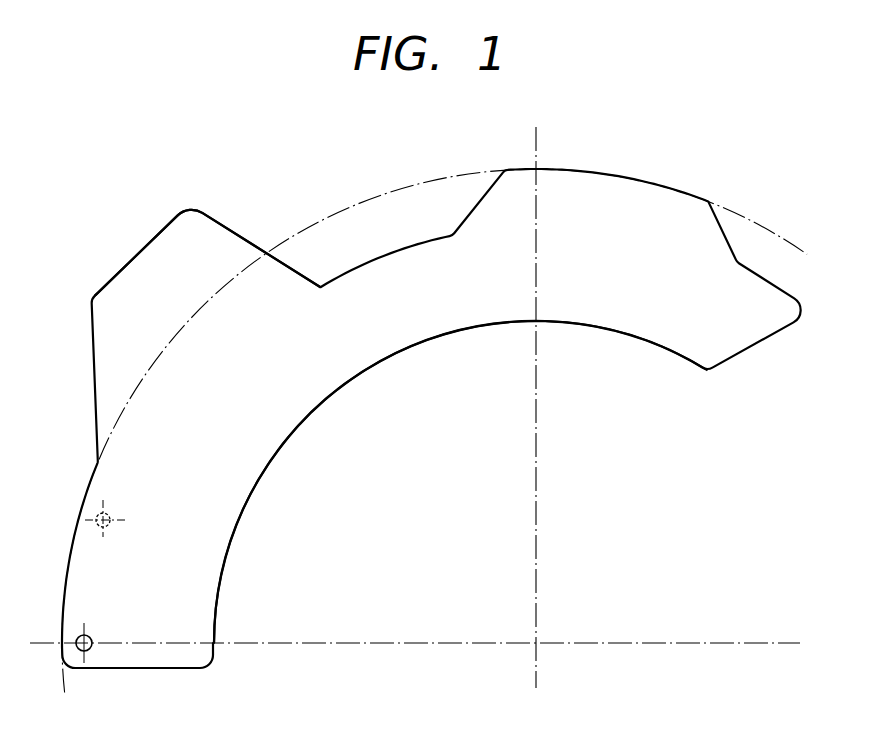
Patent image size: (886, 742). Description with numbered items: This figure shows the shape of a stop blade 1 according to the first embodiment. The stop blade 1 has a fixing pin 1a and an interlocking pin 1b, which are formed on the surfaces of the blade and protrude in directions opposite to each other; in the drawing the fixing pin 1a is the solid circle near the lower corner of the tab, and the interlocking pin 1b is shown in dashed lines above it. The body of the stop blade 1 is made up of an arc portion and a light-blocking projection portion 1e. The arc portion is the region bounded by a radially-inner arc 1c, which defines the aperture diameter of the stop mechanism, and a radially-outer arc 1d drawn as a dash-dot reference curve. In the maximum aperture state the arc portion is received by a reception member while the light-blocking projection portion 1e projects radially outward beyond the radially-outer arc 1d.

The stop blade 1 is at (647, 197).
The fixing pin 1a is at (92, 651).
The interlocking pin 1b is at (98, 513).
The radially-inner arc 1c is at (333, 393).
The radially-outer arc 1d is at (377, 195).
The light-blocking projection portion 1e is at (178, 232).